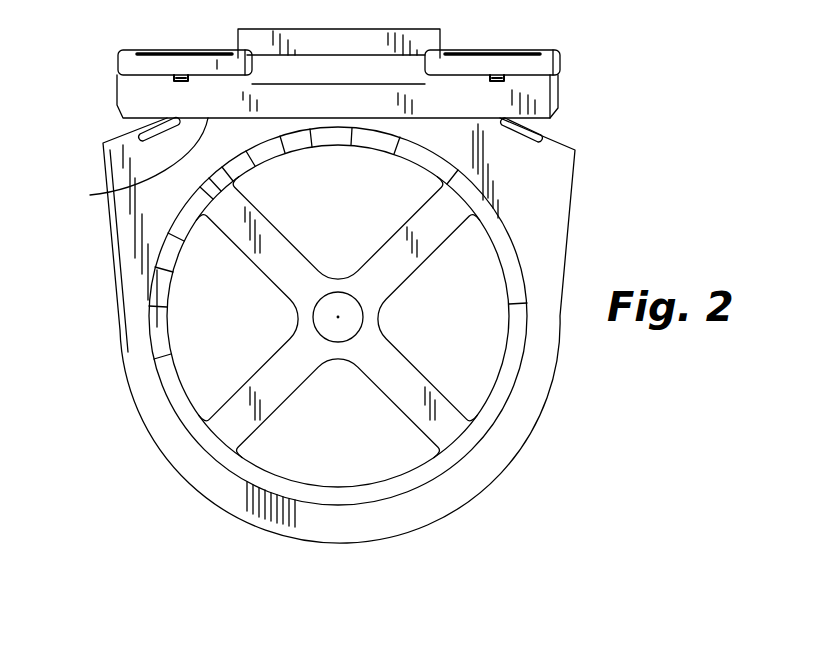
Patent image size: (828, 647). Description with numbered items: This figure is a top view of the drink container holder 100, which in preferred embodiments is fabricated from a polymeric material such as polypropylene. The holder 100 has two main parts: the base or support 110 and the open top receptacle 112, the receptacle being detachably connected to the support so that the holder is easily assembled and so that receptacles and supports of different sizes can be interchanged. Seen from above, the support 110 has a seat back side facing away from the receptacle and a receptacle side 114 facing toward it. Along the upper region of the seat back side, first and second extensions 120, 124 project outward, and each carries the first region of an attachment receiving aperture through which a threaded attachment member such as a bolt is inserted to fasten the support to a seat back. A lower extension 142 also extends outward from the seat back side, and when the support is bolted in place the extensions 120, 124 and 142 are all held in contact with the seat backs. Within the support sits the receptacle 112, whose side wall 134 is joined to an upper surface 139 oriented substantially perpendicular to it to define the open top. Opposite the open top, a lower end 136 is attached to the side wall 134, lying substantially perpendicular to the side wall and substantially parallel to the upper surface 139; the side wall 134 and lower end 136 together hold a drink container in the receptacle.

The drink container holder 100 is at (160, 474).
The support 110 is at (462, 36).
The open top receptacle 112 is at (560, 412).
The receptacle side 114 is at (128, 184).
The first extension 120 is at (120, 62).
The second extension 124 is at (563, 66).
The side wall 134 is at (512, 304).
The lower end 136 is at (300, 387).
The upper surface 139 is at (433, 497).
The lower extension 142 is at (348, 29).